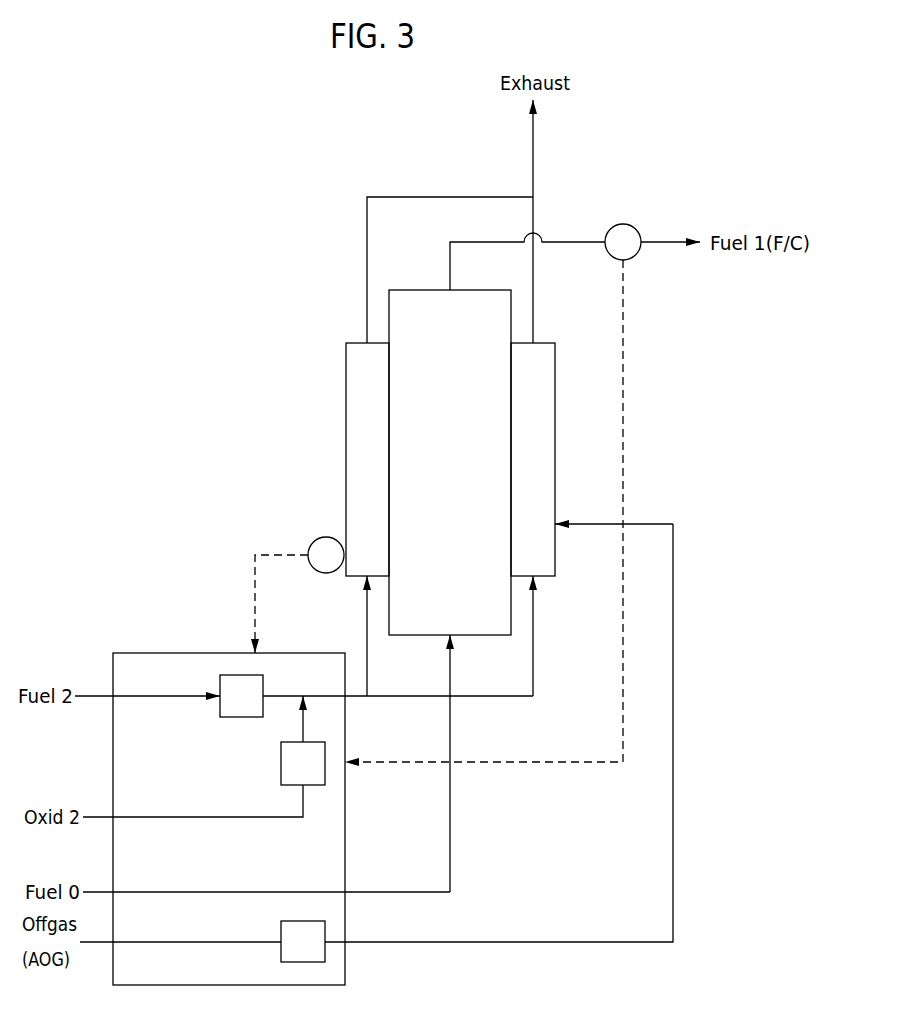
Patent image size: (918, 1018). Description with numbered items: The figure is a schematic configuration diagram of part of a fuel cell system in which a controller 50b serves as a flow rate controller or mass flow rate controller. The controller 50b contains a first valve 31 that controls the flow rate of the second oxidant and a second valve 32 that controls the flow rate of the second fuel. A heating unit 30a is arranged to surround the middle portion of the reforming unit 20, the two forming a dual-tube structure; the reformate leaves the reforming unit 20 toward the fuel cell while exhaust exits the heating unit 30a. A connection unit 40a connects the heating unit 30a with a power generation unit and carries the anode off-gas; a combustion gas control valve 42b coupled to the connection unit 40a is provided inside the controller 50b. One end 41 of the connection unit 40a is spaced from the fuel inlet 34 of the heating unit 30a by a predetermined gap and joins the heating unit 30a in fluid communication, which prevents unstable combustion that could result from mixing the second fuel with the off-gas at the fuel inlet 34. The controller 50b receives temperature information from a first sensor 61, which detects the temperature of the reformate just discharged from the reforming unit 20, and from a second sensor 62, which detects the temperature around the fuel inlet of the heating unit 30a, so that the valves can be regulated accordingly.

The reforming unit 20 is at (388, 294).
The heating unit 30a is at (346, 382).
The first sensor 61 is at (634, 256).
The second sensor 62 is at (312, 541).
The one end of the connection unit 41 is at (556, 523).
The connection unit 40a is at (673, 772).
The fuel inlet 34 is at (545, 578).
The controller 50b is at (178, 652).
The second valve 32 is at (243, 674).
The first valve 31 is at (325, 777).
The combustion gas control valve 42b is at (325, 955).